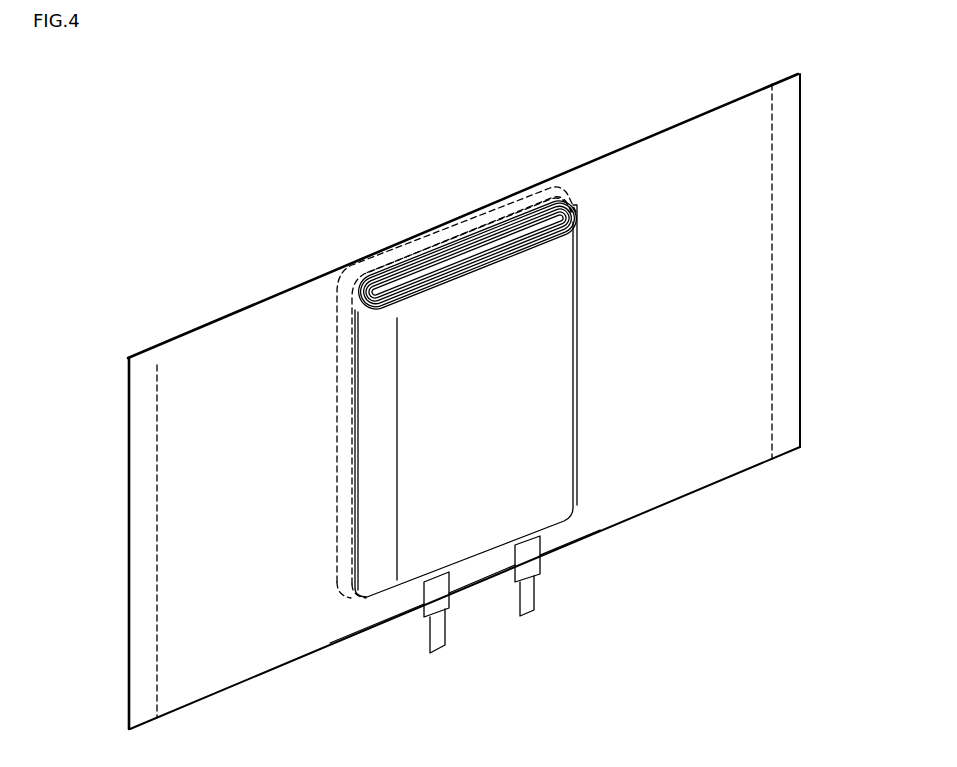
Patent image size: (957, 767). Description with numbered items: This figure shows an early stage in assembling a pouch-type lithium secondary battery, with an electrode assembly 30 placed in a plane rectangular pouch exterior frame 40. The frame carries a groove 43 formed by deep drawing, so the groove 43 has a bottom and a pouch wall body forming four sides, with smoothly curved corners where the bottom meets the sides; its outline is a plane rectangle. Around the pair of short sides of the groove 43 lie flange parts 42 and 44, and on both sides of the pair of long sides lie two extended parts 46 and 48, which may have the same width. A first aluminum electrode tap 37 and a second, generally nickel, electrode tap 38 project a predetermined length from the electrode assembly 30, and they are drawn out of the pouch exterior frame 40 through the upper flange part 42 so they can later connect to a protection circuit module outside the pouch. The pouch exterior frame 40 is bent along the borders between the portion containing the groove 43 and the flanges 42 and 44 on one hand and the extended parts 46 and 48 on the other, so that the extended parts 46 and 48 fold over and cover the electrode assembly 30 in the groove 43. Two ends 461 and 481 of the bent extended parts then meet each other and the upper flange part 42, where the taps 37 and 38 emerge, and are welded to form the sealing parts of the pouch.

The electrode assembly 30 is at (546, 511).
The first electrode tap 37 is at (437, 642).
The second electrode tap 38 is at (535, 608).
The pouch exterior frame 40 is at (676, 99).
The upper flange part 42 is at (475, 575).
The groove 43 is at (566, 190).
The flange part 44 is at (432, 236).
The extended part 46 is at (175, 488).
The end of extended part 461 is at (141, 410).
The extended part 48 is at (757, 190).
The end of extended part 481 is at (790, 110).